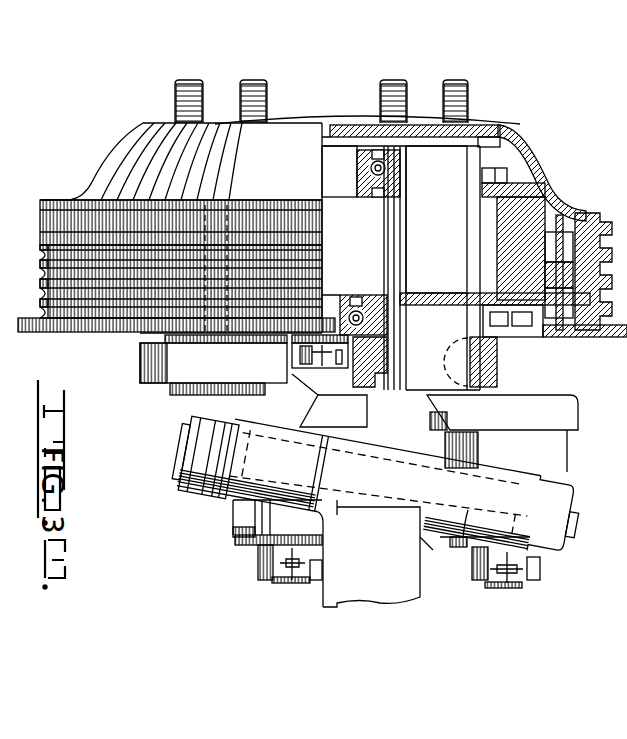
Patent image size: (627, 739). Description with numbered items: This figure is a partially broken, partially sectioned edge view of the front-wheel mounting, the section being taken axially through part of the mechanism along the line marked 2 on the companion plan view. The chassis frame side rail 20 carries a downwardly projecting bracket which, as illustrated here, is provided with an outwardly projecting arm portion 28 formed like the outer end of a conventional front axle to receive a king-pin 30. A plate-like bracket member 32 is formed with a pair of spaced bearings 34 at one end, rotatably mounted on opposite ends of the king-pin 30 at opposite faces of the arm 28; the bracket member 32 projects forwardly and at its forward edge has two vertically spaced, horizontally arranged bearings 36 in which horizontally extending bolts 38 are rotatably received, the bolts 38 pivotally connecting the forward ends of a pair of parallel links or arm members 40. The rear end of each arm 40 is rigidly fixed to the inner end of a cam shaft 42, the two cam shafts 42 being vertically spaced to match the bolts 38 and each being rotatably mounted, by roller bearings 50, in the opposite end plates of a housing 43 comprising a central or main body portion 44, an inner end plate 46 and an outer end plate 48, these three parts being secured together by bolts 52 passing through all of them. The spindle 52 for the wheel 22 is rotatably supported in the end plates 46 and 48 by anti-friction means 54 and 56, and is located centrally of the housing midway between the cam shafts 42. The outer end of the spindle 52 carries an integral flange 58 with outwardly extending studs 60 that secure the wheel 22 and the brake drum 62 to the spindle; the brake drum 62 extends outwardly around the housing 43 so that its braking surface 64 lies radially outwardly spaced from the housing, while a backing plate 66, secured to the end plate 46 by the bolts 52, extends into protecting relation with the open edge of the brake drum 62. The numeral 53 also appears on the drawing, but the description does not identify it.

The section line 2 is at (12, 220).
The chassis frame side rail 20 is at (463, 305).
The wheel 22 is at (495, 262).
The arm portion 28 is at (425, 568).
The king-pin 30 is at (190, 447).
The plate-like bracket member 32 is at (391, 503).
The spaced bearings 34 is at (228, 492).
The bearings 36 is at (228, 525).
The bolts 38 is at (292, 582).
The parallel links or arm members 40 is at (302, 375).
The cam shaft 42 is at (445, 357).
The housing 43 is at (530, 185).
The central or main body portion 44 is at (506, 282).
The inner end plate 46 is at (484, 300).
The outer end plate 48 is at (495, 211).
The roller bearings 50 is at (409, 268).
The spindle 52 is at (507, 178).
The wall 53 is at (337, 293).
The anti-friction means 54 is at (378, 293).
The anti-friction means 56 is at (378, 191).
The flange 58 is at (478, 138).
The studs 60 is at (401, 82).
The brake drum 62 is at (560, 193).
The braking surface 64 is at (584, 212).
The backing plate 66 is at (577, 300).